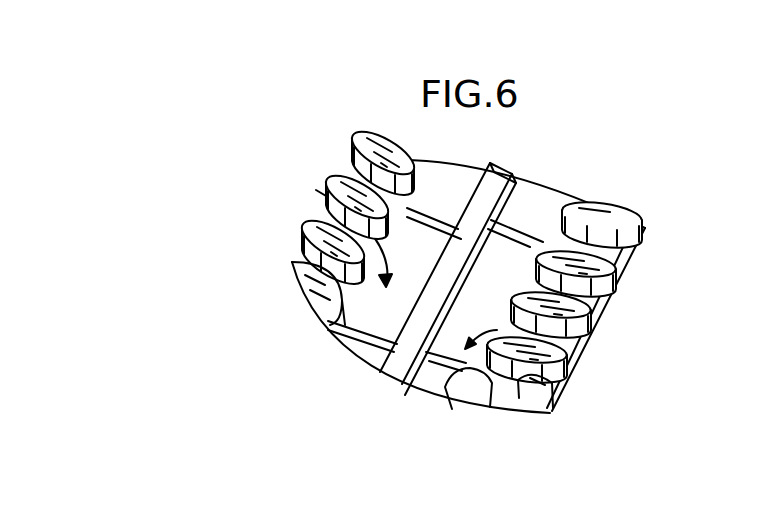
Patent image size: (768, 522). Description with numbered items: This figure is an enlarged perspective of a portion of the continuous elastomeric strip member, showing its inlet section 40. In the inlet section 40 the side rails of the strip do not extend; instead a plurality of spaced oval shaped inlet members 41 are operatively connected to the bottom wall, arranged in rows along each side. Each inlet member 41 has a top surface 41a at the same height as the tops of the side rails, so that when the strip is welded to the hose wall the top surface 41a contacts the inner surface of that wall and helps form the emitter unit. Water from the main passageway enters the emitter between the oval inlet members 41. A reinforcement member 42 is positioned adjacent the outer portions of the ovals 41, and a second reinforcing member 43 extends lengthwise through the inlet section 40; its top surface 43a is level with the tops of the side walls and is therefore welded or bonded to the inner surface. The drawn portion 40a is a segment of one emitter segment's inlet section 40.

The inlet section 40 is at (648, 241).
The second segment of inlet section 40a is at (596, 324).
The oval shaped inlet member 41 is at (491, 215).
The top surface of inlet member 41a is at (368, 130).
The reinforcement member 42 is at (298, 256).
The second reinforcing member 43 is at (496, 259).
The top surface of second reinforcing member 43a is at (500, 170).